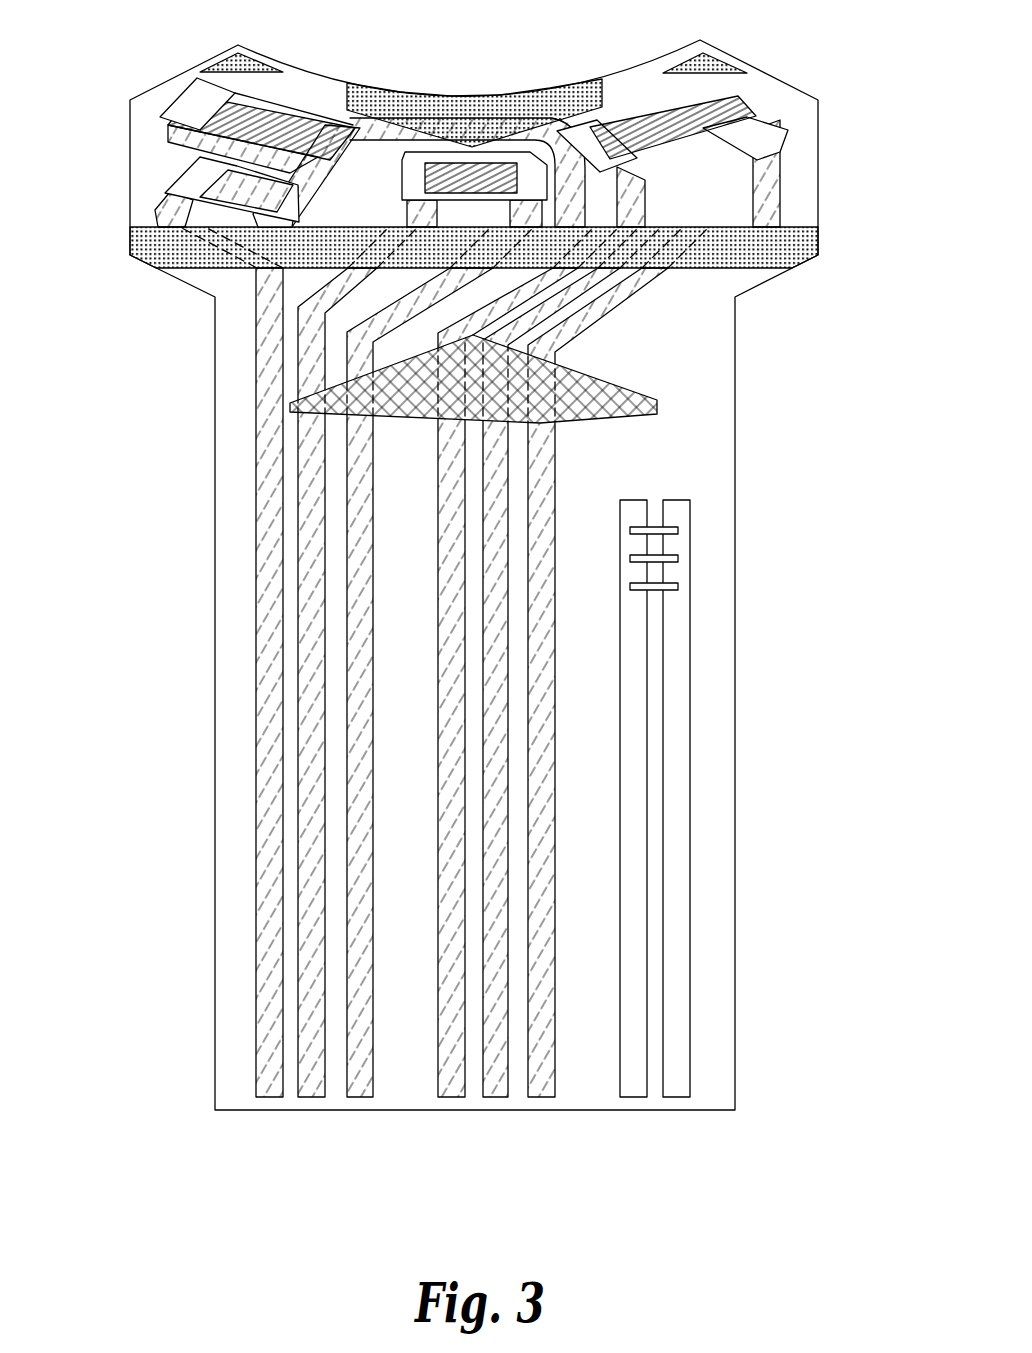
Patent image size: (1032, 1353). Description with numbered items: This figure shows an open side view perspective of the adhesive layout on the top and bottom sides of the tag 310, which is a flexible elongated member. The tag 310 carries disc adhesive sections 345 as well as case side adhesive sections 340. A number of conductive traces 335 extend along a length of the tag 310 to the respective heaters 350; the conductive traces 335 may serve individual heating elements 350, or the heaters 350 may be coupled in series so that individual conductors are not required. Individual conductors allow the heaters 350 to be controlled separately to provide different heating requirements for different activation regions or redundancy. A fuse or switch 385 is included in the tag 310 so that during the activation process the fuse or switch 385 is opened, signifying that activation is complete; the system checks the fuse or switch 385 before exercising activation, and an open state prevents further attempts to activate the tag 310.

The tag 310 is at (156, 1119).
The conductive traces 335 is at (692, 1113).
The case side adhesive sections 340 is at (290, 406).
The disc adhesive sections 345 is at (255, 66).
The heaters 350 is at (216, 110).
The fuse or switch 385 is at (678, 585).